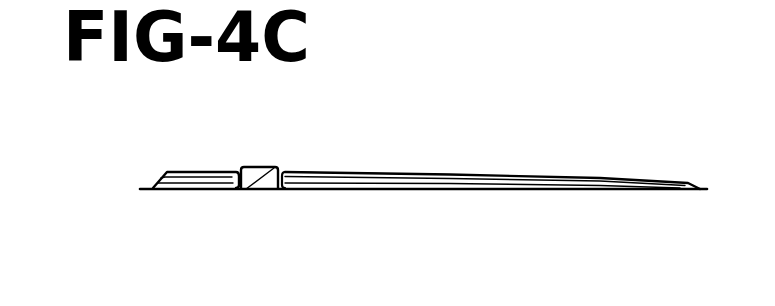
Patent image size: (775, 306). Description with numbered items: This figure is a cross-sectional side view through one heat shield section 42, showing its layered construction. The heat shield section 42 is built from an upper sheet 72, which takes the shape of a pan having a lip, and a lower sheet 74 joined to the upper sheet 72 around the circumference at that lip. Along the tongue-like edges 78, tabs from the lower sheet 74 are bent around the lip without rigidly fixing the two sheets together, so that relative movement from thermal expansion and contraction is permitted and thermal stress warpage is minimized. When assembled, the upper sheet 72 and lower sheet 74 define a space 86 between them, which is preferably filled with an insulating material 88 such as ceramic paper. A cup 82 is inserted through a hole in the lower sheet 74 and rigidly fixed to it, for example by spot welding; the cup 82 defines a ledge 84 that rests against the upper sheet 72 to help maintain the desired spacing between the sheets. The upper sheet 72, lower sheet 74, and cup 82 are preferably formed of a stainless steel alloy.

The heat shield section 42 is at (438, 172).
The upper sheet 72 is at (303, 171).
The lower sheet 74 is at (327, 192).
The tongue-like edges 78 is at (322, 299).
The cup 82 is at (280, 189).
The ledge 84 is at (246, 189).
The space 86 is at (202, 173).
The insulating material 88 is at (195, 182).